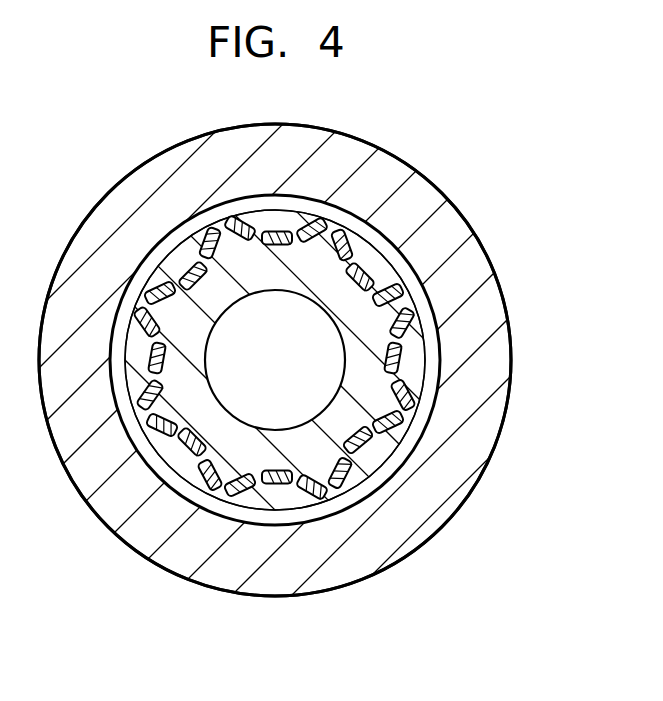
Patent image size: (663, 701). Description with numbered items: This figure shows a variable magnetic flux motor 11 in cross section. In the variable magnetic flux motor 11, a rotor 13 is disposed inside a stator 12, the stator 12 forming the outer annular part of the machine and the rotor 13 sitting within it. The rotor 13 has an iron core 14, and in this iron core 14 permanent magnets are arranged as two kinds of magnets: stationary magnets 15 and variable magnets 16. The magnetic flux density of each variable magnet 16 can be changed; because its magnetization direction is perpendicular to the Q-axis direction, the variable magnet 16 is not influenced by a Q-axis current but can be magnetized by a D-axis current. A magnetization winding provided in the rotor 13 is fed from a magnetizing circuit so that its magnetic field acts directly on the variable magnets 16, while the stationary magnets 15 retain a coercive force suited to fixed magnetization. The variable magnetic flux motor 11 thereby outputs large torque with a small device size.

The variable magnetic flux motor 11 is at (482, 141).
The stator 12 is at (502, 433).
The rotor 13 is at (493, 170).
The iron core 14 is at (387, 278).
The stationary magnet 15 is at (427, 290).
The variable magnet 16 is at (396, 352).